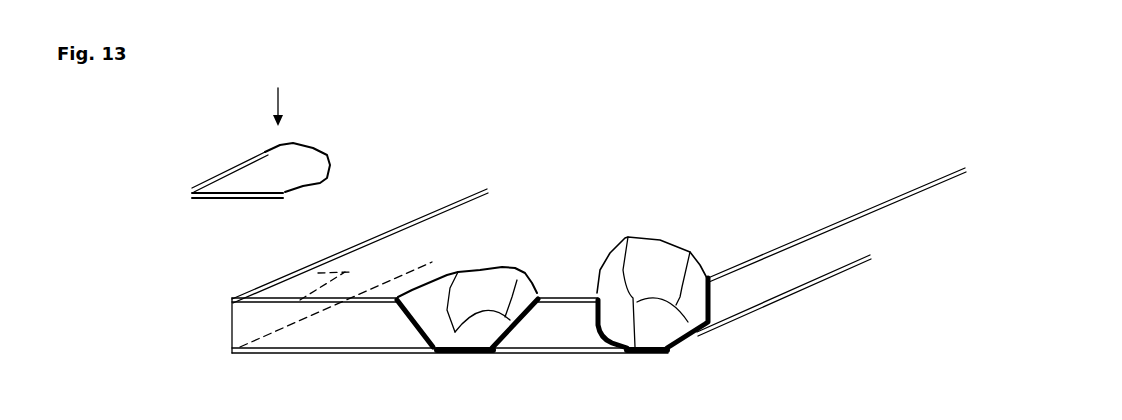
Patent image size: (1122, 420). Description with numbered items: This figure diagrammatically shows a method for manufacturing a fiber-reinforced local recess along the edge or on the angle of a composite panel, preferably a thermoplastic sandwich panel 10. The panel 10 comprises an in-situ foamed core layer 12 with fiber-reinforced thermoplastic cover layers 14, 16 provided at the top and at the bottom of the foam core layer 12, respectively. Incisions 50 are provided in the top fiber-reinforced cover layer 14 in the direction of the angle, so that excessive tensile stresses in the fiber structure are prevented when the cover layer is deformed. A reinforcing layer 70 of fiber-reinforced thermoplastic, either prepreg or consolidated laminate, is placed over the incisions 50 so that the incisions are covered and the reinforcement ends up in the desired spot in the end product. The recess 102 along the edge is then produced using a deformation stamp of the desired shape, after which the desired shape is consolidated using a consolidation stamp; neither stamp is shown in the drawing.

The thermoplastic sandwich panel 10 is at (446, 186).
The foam core layer 12 is at (247, 330).
The top cover layer 14 is at (235, 298).
The bottom cover layer 16 is at (265, 354).
The incision 50 is at (320, 273).
The reinforcing layer 70 is at (268, 165).
The recess 102 is at (471, 325).